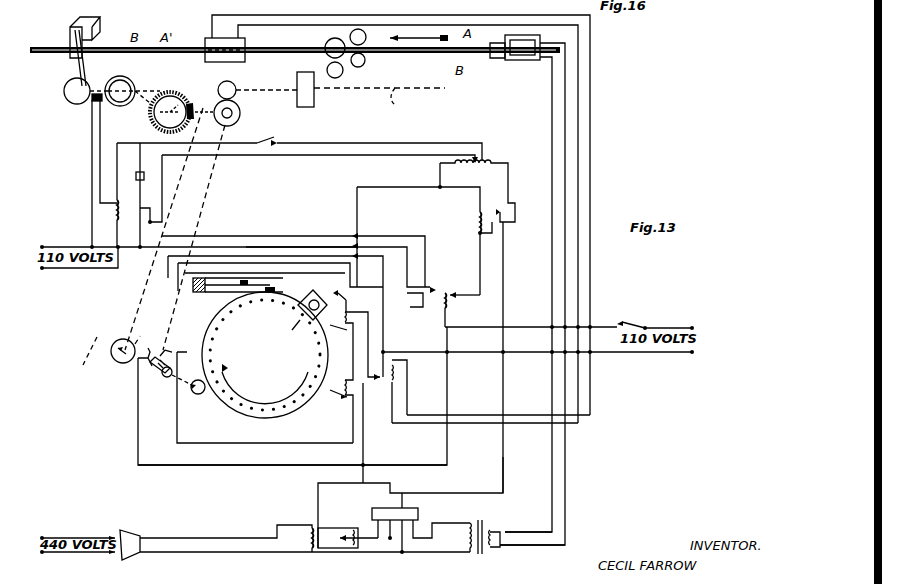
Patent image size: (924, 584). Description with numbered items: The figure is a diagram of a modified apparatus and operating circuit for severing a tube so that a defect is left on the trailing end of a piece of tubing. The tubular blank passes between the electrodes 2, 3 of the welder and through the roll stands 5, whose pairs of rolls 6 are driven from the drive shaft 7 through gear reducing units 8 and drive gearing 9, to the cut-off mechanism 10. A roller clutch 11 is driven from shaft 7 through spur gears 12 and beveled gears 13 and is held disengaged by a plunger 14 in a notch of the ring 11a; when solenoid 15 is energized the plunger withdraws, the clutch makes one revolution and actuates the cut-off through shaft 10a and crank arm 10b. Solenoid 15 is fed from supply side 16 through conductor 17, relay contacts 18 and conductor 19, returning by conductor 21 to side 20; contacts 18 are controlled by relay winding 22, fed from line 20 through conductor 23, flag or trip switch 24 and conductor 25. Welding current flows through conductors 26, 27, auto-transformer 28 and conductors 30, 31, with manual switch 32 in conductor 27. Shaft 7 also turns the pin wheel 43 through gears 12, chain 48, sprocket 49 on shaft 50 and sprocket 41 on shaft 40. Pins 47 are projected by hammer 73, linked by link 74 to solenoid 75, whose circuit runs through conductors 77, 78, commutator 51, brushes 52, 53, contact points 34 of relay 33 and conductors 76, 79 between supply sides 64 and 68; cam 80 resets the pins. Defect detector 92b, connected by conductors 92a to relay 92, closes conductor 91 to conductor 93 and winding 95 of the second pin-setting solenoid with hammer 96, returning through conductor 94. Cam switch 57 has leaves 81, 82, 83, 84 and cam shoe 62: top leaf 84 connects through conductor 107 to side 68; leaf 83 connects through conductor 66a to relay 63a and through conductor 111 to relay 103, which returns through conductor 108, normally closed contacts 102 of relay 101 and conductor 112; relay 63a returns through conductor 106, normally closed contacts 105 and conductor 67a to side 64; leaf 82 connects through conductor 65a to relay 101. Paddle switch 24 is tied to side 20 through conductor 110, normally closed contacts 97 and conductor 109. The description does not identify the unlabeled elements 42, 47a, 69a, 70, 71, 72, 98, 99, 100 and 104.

The electrode 2 is at (496, 58).
The electrode 3 is at (518, 60).
The roll stands 5 is at (640, 318).
The pairs of rolls 6 is at (364, 45).
The drive shaft 7 is at (402, 99).
The gear reducing units 8 is at (314, 98).
The drive gearing 9 is at (325, 50).
The cut-off mechanism 10 is at (94, 22).
The shaft 10a is at (70, 108).
The crank arm 10b is at (70, 66).
The roller clutch 11 is at (133, 87).
The ring 11a is at (119, 76).
The spur gears 12 is at (237, 90).
The beveled gears 13 is at (180, 102).
The plunger 14 is at (104, 103).
The solenoid 15 is at (86, 104).
The side of power supply 16 is at (42, 270).
The conductor 17 is at (116, 241).
The relay contacts 18 is at (116, 195).
The conductor 19 is at (85, 138).
The side of supply line 20 is at (45, 245).
The conductor 21 is at (90, 190).
The relay winding 22 is at (120, 195).
The conductor 23 is at (144, 230).
The flag or trip switch 24 is at (142, 172).
The conductor 25 is at (136, 144).
The conductor 26 is at (45, 556).
The conductor 27 is at (60, 525).
The auto-transformer 28 is at (348, 538).
The conductor 30 is at (550, 490).
The conductor 31 is at (570, 490).
The switch 32 is at (137, 532).
The relay 33 is at (307, 553).
The contact points 34 is at (320, 552).
The shaft 40 is at (83, 365).
The sprocket 41 is at (118, 363).
The roller 42 is at (200, 395).
The pin wheel 43 is at (265, 355).
The pins 47 is at (212, 337).
The arc 47a is at (262, 325).
The chain 48 is at (203, 190).
The sprocket 49 is at (240, 117).
The shaft 50 is at (175, 229).
The commutator 51 is at (168, 377).
The brush 52 is at (150, 348).
The brush 53 is at (167, 351).
The switch 57 is at (193, 292).
The cam shoe 62 is at (300, 308).
The relay 63a is at (470, 164).
The side of current supply 64 is at (672, 325).
The conductor 65a is at (344, 302).
The conductor 66a is at (432, 180).
The conductor 67a is at (504, 255).
The side of current supply 68 is at (690, 356).
The wire 69a is at (480, 155).
The wire 70 is at (337, 142).
The wire 71 is at (310, 162).
The switch 72 is at (273, 142).
The hammer 73 is at (332, 400).
The link 74 is at (343, 410).
The solenoid 75 is at (345, 381).
The conductor 76 is at (498, 456).
The conductor 77 is at (370, 440).
The conductor 78 is at (254, 444).
The conductor 79 is at (240, 475).
The cam 80 is at (305, 327).
The bottom leaf 81 is at (208, 307).
The leaf 82 is at (245, 315).
The leaf 83 is at (205, 289).
The top leaf 84 is at (273, 282).
The conductor 91 is at (413, 389).
The relay 92 is at (381, 385).
The conductors 92a is at (610, 108).
The defect detector 92b is at (230, 62).
The conductor 93 is at (384, 334).
The conductor 94 is at (352, 353).
The pin setting solenoid winding 95 is at (338, 287).
The hammer 96 is at (344, 332).
The normally closed contacts 97 is at (435, 285).
The rectifier 98 is at (416, 504).
The wire 99 is at (380, 506).
The wire 100 is at (426, 518).
The relay 101 is at (456, 294).
The normally closed contacts 102 is at (454, 299).
The relay 103 is at (478, 225).
The contact 104 is at (493, 211).
The normally closed contacts 105 is at (512, 198).
The conductor 106 is at (508, 163).
The conductor 107 is at (385, 318).
The conductor 108 is at (478, 260).
The conductor 109 is at (220, 236).
The conductor 110 is at (273, 238).
The conductor 111 is at (470, 190).
The conductor 112 is at (450, 325).